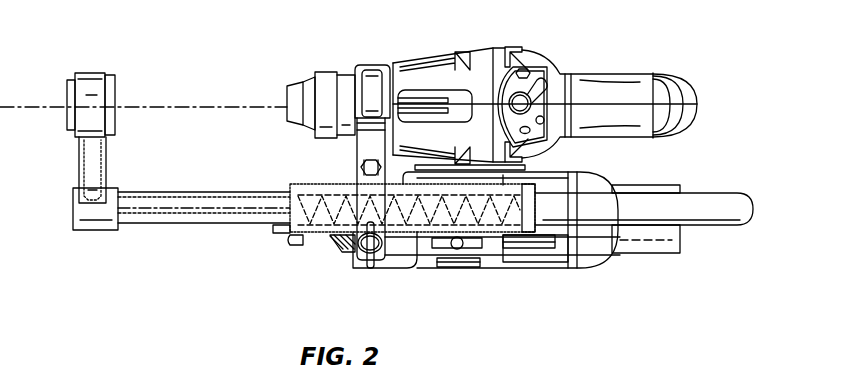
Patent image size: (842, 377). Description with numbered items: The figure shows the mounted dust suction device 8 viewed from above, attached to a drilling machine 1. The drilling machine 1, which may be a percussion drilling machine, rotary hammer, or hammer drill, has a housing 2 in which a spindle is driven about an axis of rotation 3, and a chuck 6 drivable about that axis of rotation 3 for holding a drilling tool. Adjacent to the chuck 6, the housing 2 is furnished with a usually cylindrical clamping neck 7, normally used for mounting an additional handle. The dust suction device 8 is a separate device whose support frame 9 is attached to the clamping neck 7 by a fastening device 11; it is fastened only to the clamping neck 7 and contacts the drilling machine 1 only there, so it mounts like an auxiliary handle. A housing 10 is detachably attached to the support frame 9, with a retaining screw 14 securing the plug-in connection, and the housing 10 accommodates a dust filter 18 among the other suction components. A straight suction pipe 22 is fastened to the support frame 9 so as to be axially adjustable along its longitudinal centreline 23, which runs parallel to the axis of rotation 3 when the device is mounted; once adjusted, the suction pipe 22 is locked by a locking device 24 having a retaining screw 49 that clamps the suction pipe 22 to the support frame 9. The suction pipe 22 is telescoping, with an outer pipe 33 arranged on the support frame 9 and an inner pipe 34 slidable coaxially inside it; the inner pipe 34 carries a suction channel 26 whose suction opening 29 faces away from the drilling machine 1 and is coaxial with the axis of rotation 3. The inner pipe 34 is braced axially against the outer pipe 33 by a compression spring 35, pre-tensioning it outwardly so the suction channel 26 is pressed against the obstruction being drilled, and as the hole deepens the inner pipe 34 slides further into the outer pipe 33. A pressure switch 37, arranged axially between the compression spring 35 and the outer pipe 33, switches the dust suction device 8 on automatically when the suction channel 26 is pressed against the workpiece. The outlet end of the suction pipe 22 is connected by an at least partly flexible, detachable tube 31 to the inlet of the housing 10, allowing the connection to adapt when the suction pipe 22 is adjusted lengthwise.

The drilling machine 1 is at (690, 80).
The housing 2 is at (617, 90).
The axis of rotation 3 is at (155, 100).
The chuck 6 is at (325, 78).
The clamping neck 7 is at (357, 70).
The dust suction device 8 is at (332, 240).
The support frame 9 is at (355, 160).
The housing 10 is at (595, 270).
The fastening device 11 is at (372, 66).
The retaining screw 14 is at (453, 247).
The dust filter 18 is at (545, 255).
The suction pipe 22 is at (225, 223).
The longitudinal centreline 23 is at (194, 204).
The locking device 24 is at (360, 255).
The suction channel 26 is at (79, 150).
The suction opening 29 is at (67, 95).
The tube 31 is at (652, 210).
The outer pipe 33 is at (295, 243).
The inner pipe 34 is at (150, 222).
The compression spring 35 is at (398, 235).
The pressure switch 37 is at (518, 232).
The retaining screw 49 is at (372, 265).